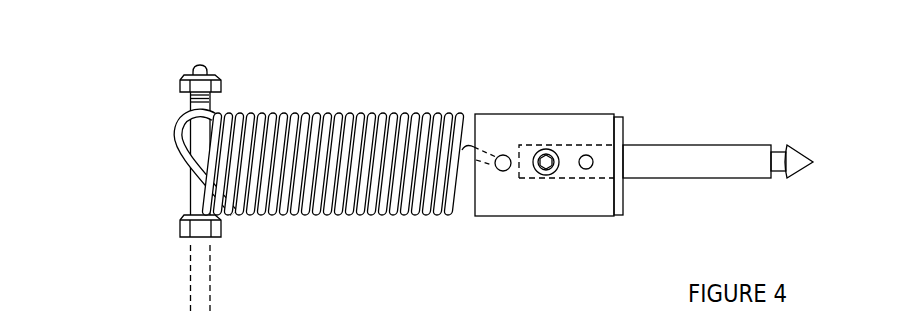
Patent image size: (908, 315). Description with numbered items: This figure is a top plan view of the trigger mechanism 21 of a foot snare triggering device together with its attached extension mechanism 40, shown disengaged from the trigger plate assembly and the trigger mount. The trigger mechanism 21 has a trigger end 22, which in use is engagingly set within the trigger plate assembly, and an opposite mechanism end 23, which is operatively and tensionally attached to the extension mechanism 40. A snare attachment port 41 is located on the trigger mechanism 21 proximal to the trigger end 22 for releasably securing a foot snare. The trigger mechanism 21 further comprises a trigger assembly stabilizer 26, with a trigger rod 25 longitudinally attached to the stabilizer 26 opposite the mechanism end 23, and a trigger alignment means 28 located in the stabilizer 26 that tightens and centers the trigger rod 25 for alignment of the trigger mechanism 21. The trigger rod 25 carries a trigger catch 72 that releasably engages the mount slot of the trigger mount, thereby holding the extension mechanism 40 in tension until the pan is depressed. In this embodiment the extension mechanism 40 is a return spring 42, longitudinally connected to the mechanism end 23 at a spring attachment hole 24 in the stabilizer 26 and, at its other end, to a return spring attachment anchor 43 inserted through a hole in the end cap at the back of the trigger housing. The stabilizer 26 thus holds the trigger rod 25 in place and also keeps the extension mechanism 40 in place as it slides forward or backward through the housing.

The trigger mechanism 21 is at (697, 116).
The trigger end 22 is at (808, 165).
The mechanism end 23 is at (542, 142).
The spring attachment hole 24 is at (502, 158).
The trigger rod 25 is at (756, 158).
The trigger assembly stabilizer 26 is at (590, 199).
The trigger alignment means 28 is at (546, 149).
The extension mechanism 40 is at (337, 154).
The snare attachment port 41 is at (586, 155).
The return spring 42 is at (355, 193).
The return spring attachment anchor 43 is at (196, 92).
The trigger catch 72 is at (777, 171).